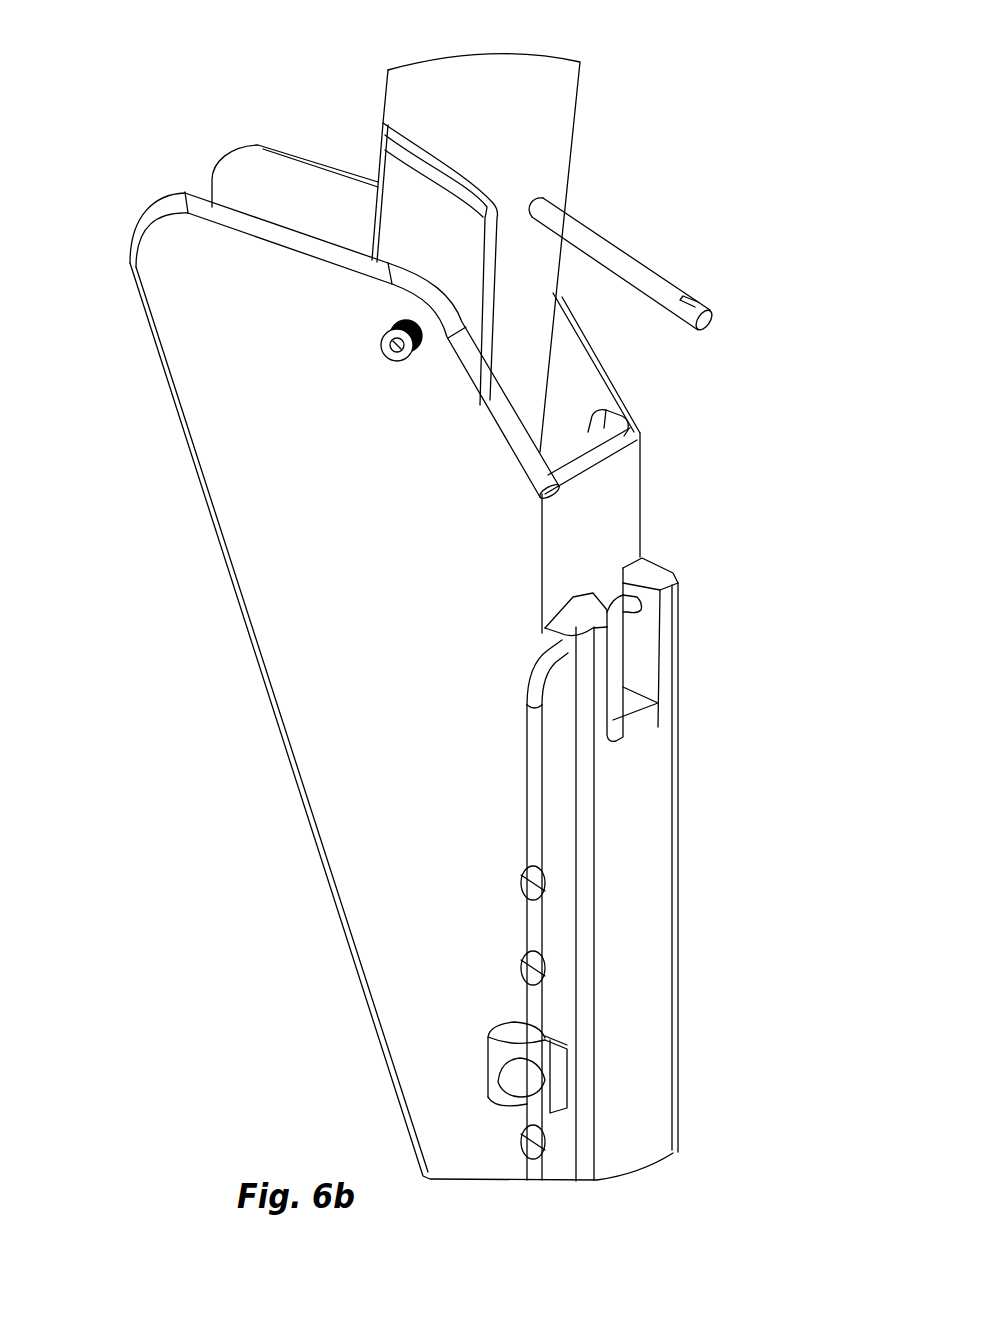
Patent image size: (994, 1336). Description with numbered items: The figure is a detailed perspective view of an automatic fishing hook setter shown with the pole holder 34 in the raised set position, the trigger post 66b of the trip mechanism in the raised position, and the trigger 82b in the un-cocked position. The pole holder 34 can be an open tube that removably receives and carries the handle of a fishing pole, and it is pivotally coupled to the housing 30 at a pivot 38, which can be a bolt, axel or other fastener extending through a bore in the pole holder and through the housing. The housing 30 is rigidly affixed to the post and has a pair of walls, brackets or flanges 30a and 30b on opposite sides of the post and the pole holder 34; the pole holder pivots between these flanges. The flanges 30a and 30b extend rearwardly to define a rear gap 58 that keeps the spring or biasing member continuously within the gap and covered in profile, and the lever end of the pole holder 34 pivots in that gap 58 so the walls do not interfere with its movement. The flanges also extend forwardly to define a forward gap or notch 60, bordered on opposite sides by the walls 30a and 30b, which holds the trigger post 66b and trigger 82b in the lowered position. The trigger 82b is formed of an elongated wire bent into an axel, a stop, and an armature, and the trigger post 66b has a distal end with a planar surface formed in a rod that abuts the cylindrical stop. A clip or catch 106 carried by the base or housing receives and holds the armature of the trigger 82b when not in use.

The housing 30 is at (280, 760).
The wall, bracket or flange 30a is at (158, 250).
The wall, bracket or flange 30b is at (280, 172).
The pole holder 34 is at (570, 97).
The pivot 38 is at (382, 337).
The rear gap 58 is at (242, 183).
The forward gap or notch 60 is at (642, 685).
The trigger post 66b is at (651, 262).
The trigger 82b is at (525, 831).
The clip or catch 106 is at (500, 1063).